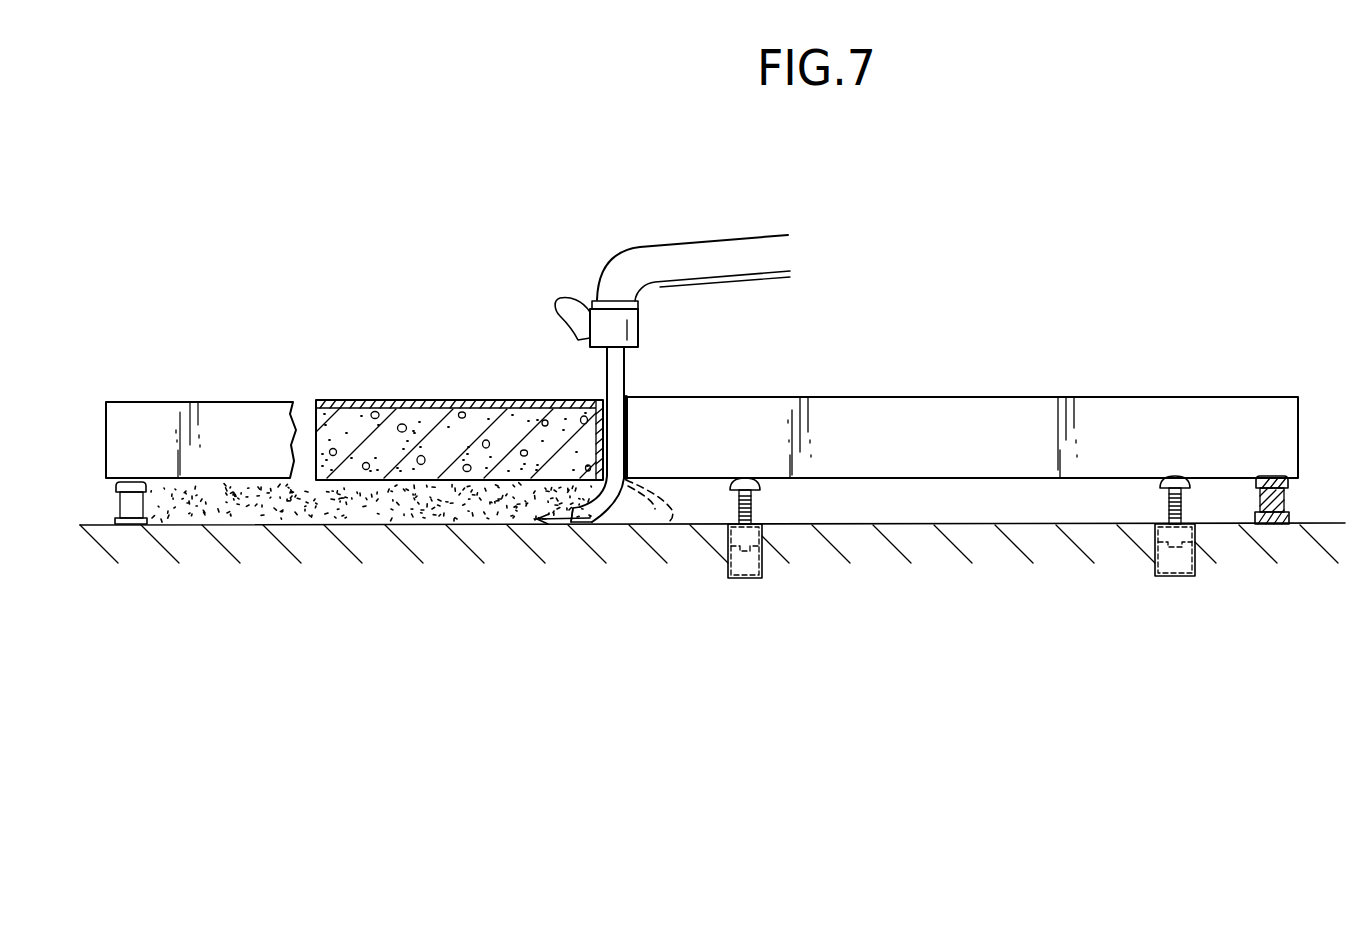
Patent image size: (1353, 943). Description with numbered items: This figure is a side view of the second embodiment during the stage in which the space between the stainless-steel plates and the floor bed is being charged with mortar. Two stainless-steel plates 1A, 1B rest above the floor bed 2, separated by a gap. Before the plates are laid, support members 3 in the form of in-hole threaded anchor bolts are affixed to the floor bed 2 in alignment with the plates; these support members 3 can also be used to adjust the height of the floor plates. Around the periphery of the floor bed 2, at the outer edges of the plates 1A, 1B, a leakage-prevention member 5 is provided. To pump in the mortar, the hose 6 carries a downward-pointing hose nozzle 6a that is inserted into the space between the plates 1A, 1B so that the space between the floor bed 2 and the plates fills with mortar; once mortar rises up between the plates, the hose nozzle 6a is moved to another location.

The stainless-steel plate 1A is at (370, 400).
The stainless-steel plate 1B is at (1000, 410).
The floor bed 2 is at (946, 598).
The support member 3 is at (760, 487).
The leakage-prevention member 5 is at (132, 508).
The hose 6 is at (620, 376).
The hose nozzle 6a is at (583, 513).